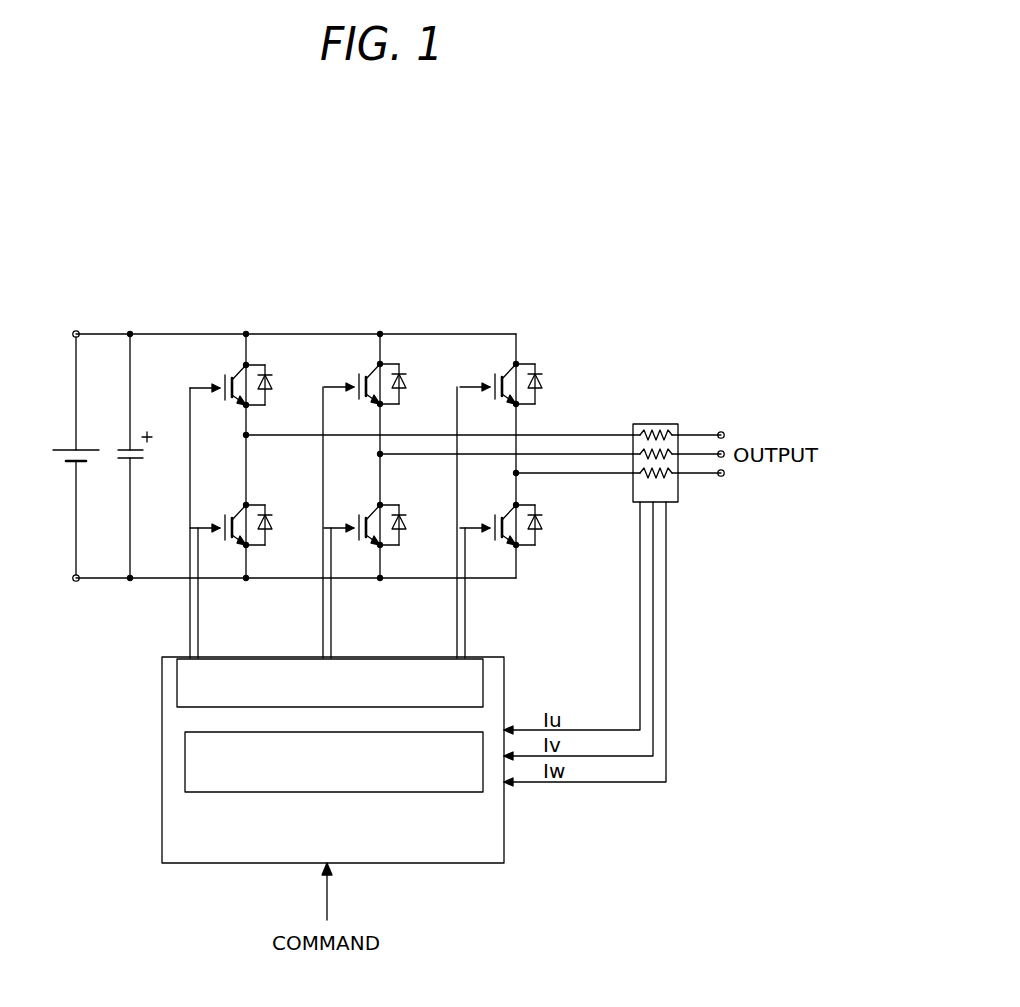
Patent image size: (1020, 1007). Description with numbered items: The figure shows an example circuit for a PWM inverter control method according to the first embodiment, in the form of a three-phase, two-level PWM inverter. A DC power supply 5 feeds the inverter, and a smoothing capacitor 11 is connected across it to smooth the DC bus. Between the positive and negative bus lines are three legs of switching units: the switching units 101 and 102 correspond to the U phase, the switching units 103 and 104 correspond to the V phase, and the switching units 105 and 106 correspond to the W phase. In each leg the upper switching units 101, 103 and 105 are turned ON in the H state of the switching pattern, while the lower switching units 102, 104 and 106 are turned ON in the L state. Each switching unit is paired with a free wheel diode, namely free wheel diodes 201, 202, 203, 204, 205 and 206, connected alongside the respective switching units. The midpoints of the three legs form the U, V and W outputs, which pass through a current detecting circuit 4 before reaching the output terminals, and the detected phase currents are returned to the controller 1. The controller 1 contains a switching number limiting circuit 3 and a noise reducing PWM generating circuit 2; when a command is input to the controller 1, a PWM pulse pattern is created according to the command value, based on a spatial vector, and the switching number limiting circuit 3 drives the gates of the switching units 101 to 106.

The controller 1 is at (333, 760).
The noise reducing PWM generating circuit 2 is at (334, 762).
The switching number limiting circuit 3 is at (330, 683).
The current detecting circuit 4 is at (655, 424).
The DC power supply 5 is at (64, 450).
The smoothing capacitor 11 is at (127, 449).
The switching unit 101 is at (226, 377).
The switching unit 102 is at (226, 516).
The switching unit 103 is at (364, 377).
The switching unit 104 is at (360, 516).
The switching unit 105 is at (499, 377).
The switching unit 106 is at (496, 516).
The free wheel diode 201 is at (270, 384).
The free wheel diode 202 is at (268, 521).
The free wheel diode 203 is at (402, 383).
The free wheel diode 204 is at (402, 521).
The free wheel diode 205 is at (542, 385).
The free wheel diode 206 is at (544, 519).